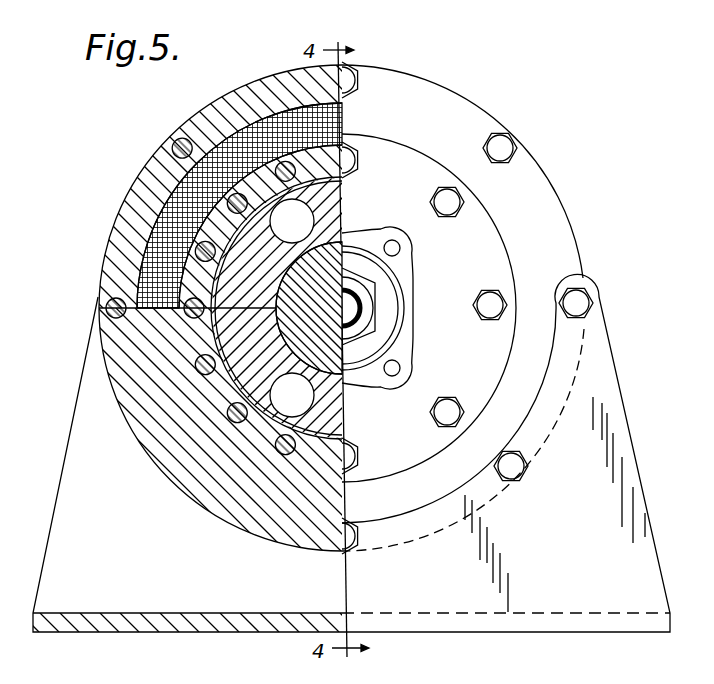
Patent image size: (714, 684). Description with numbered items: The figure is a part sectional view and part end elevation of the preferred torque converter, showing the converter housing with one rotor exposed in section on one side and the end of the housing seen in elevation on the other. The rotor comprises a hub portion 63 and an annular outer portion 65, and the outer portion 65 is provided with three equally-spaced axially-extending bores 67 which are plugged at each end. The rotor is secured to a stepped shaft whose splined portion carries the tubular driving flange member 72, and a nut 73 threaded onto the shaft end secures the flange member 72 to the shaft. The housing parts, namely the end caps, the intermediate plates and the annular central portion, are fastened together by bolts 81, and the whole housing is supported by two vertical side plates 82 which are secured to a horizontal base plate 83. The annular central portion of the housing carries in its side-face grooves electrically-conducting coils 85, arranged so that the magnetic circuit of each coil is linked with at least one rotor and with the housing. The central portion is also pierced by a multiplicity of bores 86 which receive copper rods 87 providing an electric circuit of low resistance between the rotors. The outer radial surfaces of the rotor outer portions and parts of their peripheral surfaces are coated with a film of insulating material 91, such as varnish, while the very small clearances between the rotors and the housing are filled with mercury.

The hub portion 63 is at (372, 347).
The annular outer portion 65 is at (250, 337).
The axially-extending bores 67 is at (308, 212).
The tubular driving flange member 72 is at (400, 250).
The nuts 73 is at (365, 318).
The bolts 81 is at (197, 113).
The vertical side plates 82 is at (577, 407).
The horizontal base plate 83 is at (420, 612).
The electrically-conducting coils 85 is at (324, 118).
The bores 86 is at (186, 278).
The copper rods 87 is at (230, 201).
The insulating material 91 is at (342, 431).